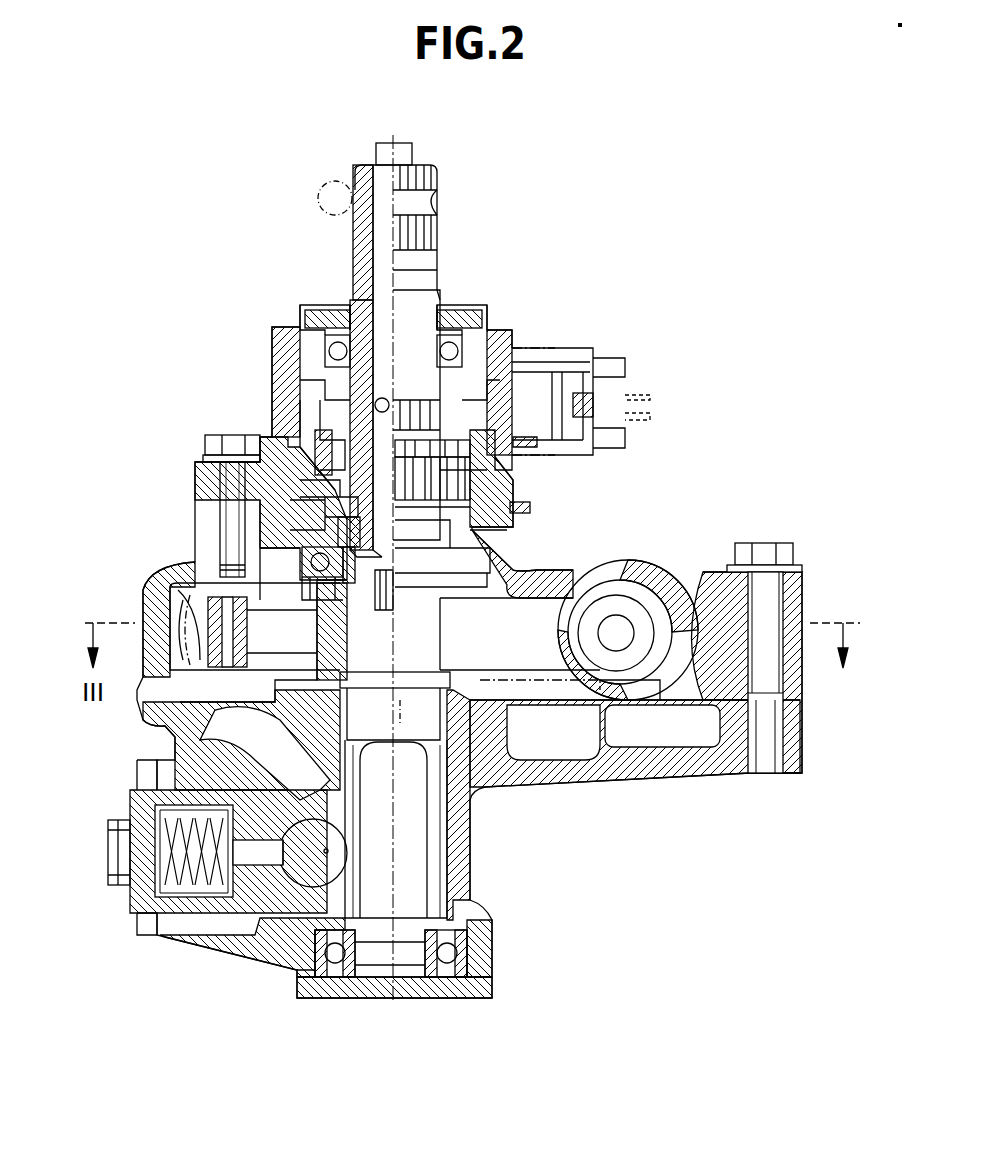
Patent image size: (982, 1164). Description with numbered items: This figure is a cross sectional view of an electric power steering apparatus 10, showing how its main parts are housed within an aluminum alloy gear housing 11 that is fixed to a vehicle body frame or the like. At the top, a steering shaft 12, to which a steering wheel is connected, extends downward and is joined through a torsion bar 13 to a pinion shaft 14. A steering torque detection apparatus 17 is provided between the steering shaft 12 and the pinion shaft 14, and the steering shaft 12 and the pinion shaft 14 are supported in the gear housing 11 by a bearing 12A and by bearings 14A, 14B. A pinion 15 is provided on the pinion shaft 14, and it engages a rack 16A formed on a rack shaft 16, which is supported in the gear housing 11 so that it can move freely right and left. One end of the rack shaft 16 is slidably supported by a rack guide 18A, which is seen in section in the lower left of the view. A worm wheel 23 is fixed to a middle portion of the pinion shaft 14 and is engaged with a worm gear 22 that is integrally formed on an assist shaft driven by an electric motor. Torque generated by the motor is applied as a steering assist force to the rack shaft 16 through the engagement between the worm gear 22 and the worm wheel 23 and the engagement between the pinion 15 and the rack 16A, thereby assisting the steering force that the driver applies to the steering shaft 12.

The electric power steering apparatus 10 is at (577, 248).
The gear housing 11 is at (800, 595).
The steering shaft 12 is at (355, 236).
The bearing 12A is at (322, 352).
The torsion bar 13 is at (383, 300).
The pinion shaft 14 is at (320, 537).
The bearing 14A is at (302, 562).
The bearing 14B is at (322, 970).
The pinion 15 is at (440, 857).
The rack shaft 16 is at (303, 890).
The rack 16A is at (378, 840).
The steering torque detection apparatus 17 is at (258, 435).
The rack guide 18A is at (227, 905).
The worm gear 22 is at (635, 602).
The worm wheel 23 is at (543, 612).